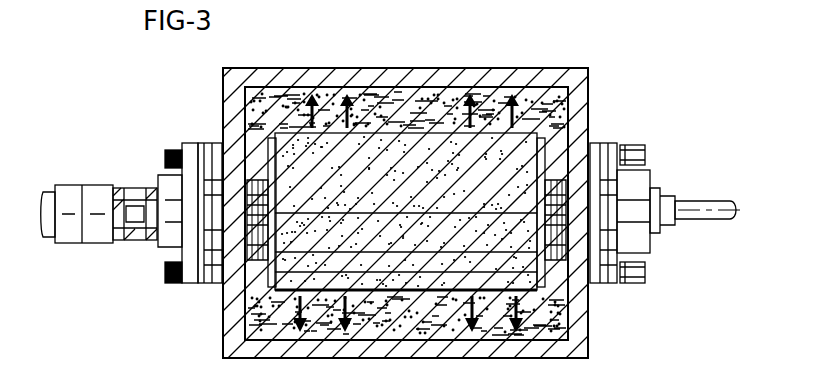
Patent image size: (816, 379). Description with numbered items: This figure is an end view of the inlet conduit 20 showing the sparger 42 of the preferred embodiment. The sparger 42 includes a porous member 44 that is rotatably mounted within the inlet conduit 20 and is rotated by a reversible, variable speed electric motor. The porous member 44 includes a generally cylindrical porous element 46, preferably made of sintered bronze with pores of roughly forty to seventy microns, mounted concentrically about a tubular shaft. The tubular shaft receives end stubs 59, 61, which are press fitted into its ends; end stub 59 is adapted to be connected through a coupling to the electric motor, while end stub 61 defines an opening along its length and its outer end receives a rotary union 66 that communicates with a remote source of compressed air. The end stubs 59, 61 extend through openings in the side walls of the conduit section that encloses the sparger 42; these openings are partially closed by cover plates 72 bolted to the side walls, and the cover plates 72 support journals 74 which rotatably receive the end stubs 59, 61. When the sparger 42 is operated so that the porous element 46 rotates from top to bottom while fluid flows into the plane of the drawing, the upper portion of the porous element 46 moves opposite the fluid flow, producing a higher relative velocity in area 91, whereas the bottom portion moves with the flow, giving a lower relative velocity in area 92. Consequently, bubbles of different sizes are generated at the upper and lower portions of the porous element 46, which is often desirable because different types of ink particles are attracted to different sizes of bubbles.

The inlet conduit 20 is at (281, 68).
The sparger 42 is at (530, 46).
The porous member 44 is at (538, 120).
The porous element 46 is at (500, 189).
The end stub 59 is at (688, 201).
The end stub 61 is at (138, 186).
The rotary union 66 is at (95, 185).
The cover plates 72 is at (206, 284).
The journals 74 is at (162, 245).
The area 91 is at (426, 106).
The area 92 is at (422, 326).